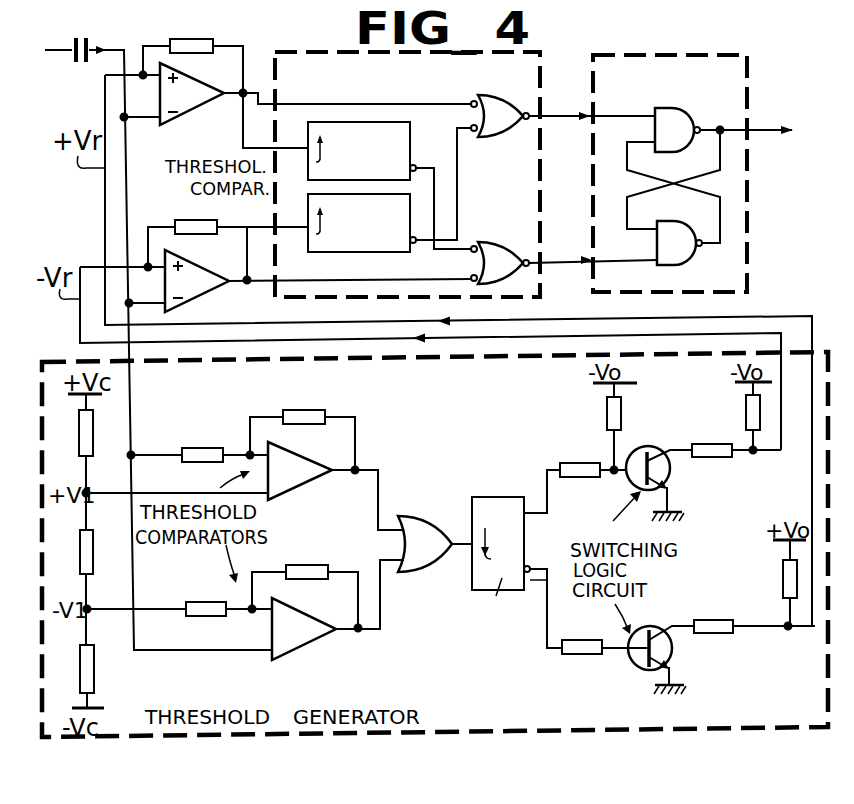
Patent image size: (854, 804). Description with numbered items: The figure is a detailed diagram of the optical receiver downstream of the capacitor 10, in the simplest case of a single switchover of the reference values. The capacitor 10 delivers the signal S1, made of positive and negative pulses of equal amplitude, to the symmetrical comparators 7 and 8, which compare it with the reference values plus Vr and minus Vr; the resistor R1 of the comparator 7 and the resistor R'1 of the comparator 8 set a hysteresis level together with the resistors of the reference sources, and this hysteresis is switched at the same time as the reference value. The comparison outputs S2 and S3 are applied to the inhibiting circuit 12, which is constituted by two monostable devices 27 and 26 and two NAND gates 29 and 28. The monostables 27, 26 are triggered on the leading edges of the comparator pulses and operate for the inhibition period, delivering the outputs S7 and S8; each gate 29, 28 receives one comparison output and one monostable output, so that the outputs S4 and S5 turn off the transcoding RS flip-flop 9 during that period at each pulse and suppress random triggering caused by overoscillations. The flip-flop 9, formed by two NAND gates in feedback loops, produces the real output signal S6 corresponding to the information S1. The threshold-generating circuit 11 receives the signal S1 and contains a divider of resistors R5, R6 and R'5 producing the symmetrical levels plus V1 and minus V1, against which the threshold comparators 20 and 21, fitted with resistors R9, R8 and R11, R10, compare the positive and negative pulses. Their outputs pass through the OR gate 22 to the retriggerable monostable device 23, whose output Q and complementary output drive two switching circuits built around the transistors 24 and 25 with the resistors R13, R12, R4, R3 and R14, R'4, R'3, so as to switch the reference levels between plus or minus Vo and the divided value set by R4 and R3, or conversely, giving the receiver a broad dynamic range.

The capacitor 10 is at (69, 64).
The signal S1 is at (118, 48).
The resistor R1 is at (200, 36).
The comparator 7 is at (193, 140).
The comparison output signal S2 is at (372, 88).
The resistor R'1 is at (228, 237).
The comparison output signal S3 is at (250, 257).
The comparator 8 is at (200, 298).
The threshold-generating circuit 11 is at (64, 325).
The inhibiting circuit 12 is at (405, 161).
The monostable device 27 is at (334, 181).
The monostable device 26 is at (334, 254).
The monostable output signal S7 is at (434, 167).
The monostable output signal S8 is at (458, 198).
The NAND gate 29 is at (497, 72).
The NAND gate 28 is at (496, 222).
The gate output signal S4 is at (572, 120).
The gate output signal S5 is at (572, 246).
The transcoding RS flip-flop 9 is at (616, 50).
The output signal S6 is at (776, 115).
The resistor R5 is at (115, 428).
The resistor R6 is at (113, 554).
The resistor R'5 is at (112, 673).
The resistor R9 is at (201, 444).
The resistor R8 is at (300, 381).
The threshold comparator 20 is at (293, 494).
The resistor R11 is at (206, 574).
The resistor R10 is at (322, 563).
The threshold comparator 21 is at (300, 652).
The OR gate 22 is at (424, 505).
The retriggerable monostable device 23 is at (492, 468).
The resistor R13 is at (578, 437).
The resistor R12 is at (604, 420).
The transistor 24 is at (672, 472).
The resistor R4 is at (703, 415).
The resistor R3 is at (746, 414).
The resistor R14 is at (595, 658).
The transistor 25 is at (674, 648).
The resistor R'4 is at (749, 609).
The resistor R'3 is at (765, 583).